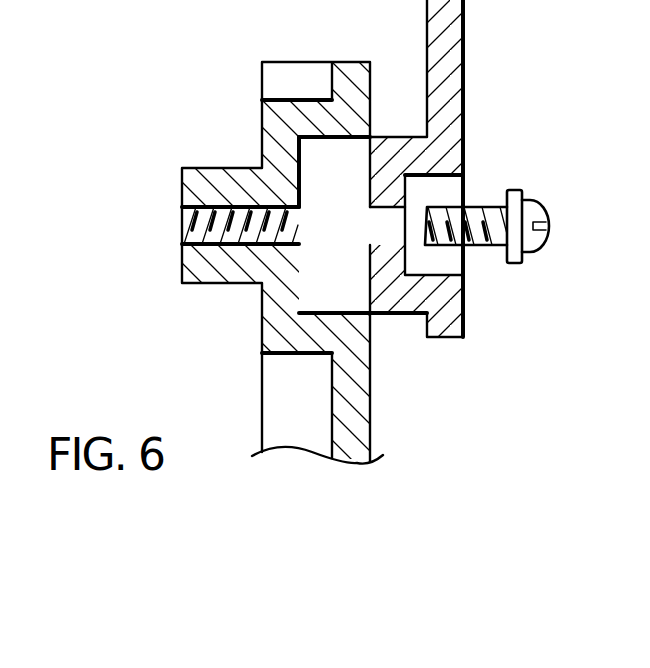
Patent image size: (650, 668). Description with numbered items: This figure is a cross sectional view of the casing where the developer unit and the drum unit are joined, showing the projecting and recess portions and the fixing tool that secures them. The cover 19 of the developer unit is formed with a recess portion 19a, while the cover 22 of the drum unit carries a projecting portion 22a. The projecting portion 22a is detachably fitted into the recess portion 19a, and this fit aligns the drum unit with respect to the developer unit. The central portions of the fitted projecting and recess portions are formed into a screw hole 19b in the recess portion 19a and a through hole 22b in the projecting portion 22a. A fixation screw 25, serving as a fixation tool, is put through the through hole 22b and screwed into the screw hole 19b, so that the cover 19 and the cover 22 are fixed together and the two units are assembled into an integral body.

The cover 19 is at (296, 98).
The recess portion 19a is at (309, 160).
The screw hole 19b is at (278, 228).
The cover 22 is at (457, 36).
The projecting portion 22a is at (390, 163).
The through hole 22b is at (375, 228).
The fixation screw 25 is at (522, 190).